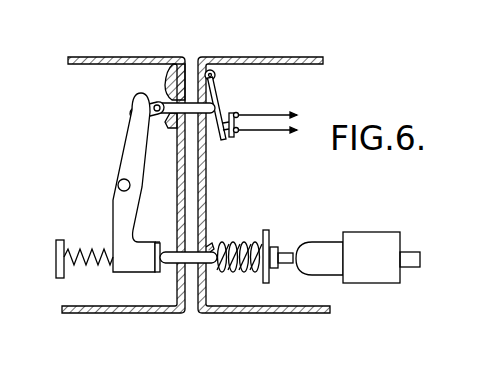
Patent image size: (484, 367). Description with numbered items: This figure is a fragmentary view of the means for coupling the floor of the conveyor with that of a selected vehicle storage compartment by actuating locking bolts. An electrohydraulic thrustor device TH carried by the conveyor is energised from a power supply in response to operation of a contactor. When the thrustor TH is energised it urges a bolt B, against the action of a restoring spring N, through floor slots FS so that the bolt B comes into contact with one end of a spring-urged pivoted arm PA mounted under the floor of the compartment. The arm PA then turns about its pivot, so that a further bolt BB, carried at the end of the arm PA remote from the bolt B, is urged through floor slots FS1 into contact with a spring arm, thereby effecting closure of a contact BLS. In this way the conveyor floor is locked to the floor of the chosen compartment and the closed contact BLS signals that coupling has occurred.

The floor slots FS1 is at (170, 98).
The further bolt BB is at (193, 102).
The contact BLS is at (233, 137).
The spring-urged pivoted arm PA is at (122, 157).
The bolt B is at (192, 265).
The floor slots FS is at (196, 248).
The restoring spring N is at (247, 273).
The electrohydraulic thrustor device TH is at (383, 242).